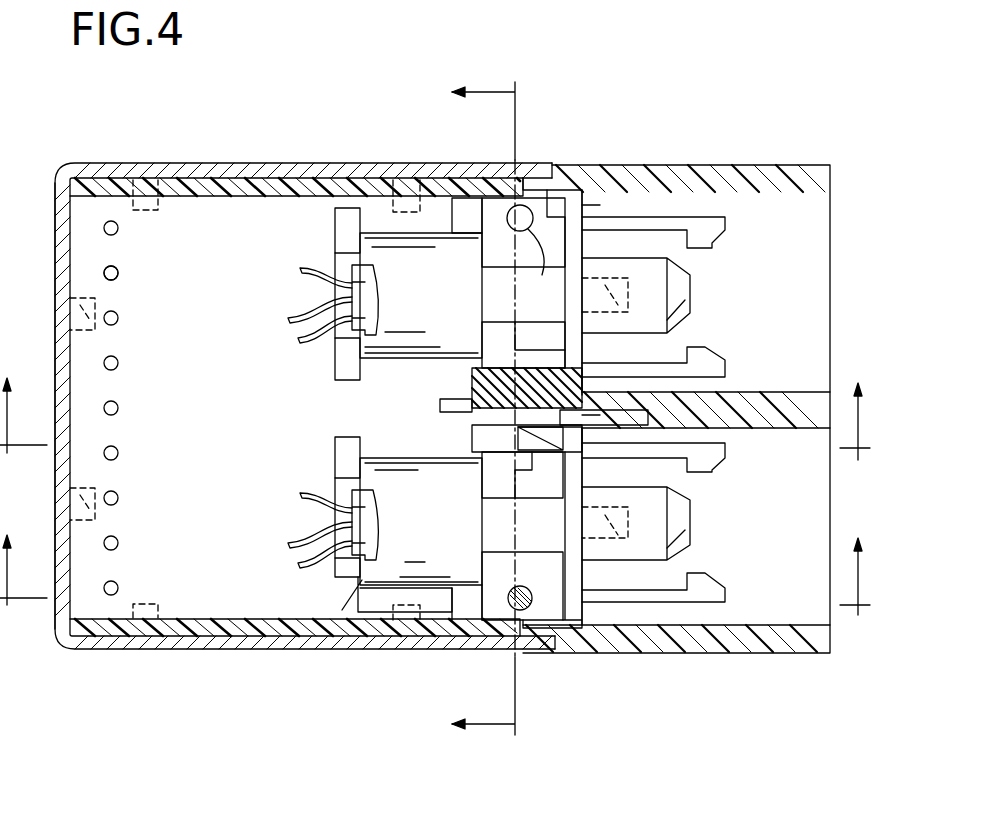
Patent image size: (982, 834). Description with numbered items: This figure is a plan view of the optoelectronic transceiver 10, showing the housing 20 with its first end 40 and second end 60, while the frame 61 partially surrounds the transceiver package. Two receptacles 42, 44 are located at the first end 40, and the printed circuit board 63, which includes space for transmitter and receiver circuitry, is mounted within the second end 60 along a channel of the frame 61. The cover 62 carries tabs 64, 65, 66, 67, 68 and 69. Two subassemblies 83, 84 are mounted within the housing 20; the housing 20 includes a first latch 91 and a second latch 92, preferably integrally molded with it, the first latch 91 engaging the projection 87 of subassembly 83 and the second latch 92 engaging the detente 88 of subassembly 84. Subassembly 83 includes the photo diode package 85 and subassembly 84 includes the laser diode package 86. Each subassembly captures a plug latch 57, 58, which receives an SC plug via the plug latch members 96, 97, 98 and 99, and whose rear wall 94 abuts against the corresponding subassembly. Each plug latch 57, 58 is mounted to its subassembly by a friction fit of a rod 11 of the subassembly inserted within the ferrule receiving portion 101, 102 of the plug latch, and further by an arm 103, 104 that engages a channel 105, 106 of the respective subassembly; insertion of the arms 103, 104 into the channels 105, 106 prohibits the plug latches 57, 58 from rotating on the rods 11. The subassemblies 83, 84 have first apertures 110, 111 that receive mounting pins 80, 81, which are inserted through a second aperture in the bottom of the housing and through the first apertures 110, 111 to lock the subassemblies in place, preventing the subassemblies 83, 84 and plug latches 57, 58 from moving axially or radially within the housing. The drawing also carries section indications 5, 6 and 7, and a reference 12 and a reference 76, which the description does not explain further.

The optoelectronic transceiver 10 is at (214, 670).
The rod 11 is at (620, 278).
The partition member 12 is at (440, 405).
The housing 20 is at (478, 640).
The first end 40 is at (728, 143).
The receptacle 42 is at (840, 500).
The receptacle 44 is at (832, 270).
The plug latch 57 is at (692, 285).
The plug latch 58 is at (690, 515).
The second end 60 is at (214, 138).
The frame 61 is at (285, 196).
The cover 62 is at (318, 165).
The printed circuit board 63 is at (212, 444).
The tab 64 is at (400, 625).
The tab 65 is at (155, 605).
The tab 66 is at (105, 505).
The tab 67 is at (110, 325).
The tab 68 is at (150, 222).
The tab 69 is at (405, 180).
The cable aperture 76 is at (112, 273).
The mounting pin 80 is at (531, 606).
The mounting pin 81 is at (508, 229).
The subassembly 83 is at (420, 294).
The subassembly 84 is at (445, 522).
The photo diode package 85 is at (345, 337).
The laser diode package 86 is at (337, 479).
The projection 87 is at (520, 350).
The detente 88 is at (470, 422).
The first latch 91 is at (470, 390).
The second latch 92 is at (485, 452).
The rear wall 94 is at (582, 240).
The plug latch member 96 is at (728, 232).
The plug latch member 97 is at (722, 362).
The plug latch member 98 is at (725, 458).
The plug latch member 99 is at (722, 592).
The ferrule receiving portion 101 is at (690, 320).
The ferrule receiving portion 102 is at (690, 535).
The arm 103 is at (582, 195).
The arm 104 is at (541, 336).
The channel 105 is at (548, 190).
The channel 106 is at (582, 445).
The first aperture 110 is at (530, 232).
The first aperture 111 is at (528, 588).
The section line 5- 5 is at (443, 419).
The section line 6- 6 is at (443, 575).
The section line 7- 7 is at (483, 412).